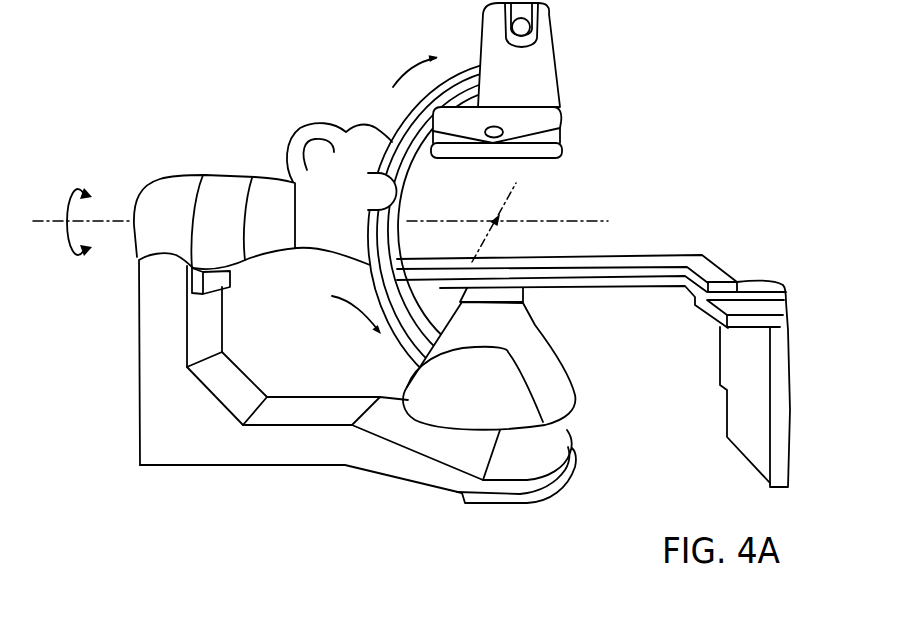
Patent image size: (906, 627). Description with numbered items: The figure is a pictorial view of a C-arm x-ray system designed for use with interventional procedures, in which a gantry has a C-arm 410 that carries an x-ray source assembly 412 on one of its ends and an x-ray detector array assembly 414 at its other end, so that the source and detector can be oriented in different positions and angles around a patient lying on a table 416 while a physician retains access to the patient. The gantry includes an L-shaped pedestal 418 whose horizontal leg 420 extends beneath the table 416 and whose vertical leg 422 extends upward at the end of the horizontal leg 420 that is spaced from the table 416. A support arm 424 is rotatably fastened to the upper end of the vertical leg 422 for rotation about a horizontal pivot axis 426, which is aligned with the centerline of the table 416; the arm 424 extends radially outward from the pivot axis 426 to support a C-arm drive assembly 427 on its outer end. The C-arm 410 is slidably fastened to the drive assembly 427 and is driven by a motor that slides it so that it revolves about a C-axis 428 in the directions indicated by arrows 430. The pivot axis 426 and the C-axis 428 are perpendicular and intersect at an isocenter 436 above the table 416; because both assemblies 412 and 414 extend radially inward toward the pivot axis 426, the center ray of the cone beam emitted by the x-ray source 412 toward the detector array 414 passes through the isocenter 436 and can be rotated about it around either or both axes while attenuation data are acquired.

The C-arm 410 is at (386, 104).
The x-ray source assembly 412 is at (543, 334).
The x-ray detector array assembly 414 is at (573, 137).
The table 416 is at (606, 253).
The L-shaped pedestal 418 is at (264, 366).
The horizontal leg 420 is at (353, 395).
The vertical leg 422 is at (139, 371).
The support arm 424 is at (270, 178).
The horizontal pivot axis 426 is at (117, 221).
The C-arm drive assembly 427 is at (357, 148).
The C-axis 428 is at (516, 187).
The arrows 430 is at (406, 72).
The isocenter 436 is at (500, 224).